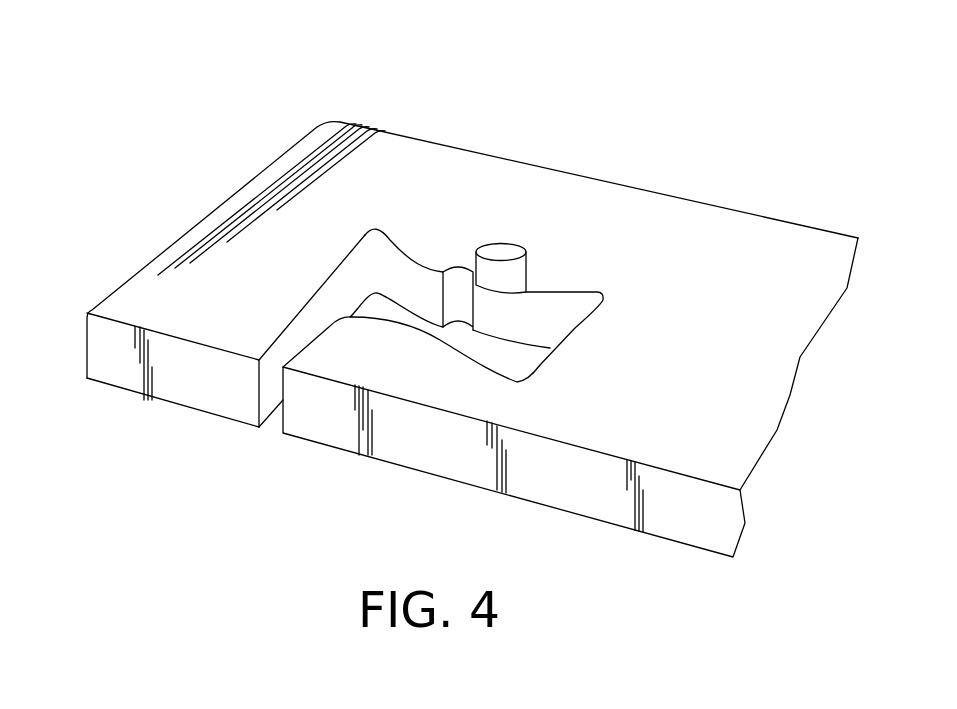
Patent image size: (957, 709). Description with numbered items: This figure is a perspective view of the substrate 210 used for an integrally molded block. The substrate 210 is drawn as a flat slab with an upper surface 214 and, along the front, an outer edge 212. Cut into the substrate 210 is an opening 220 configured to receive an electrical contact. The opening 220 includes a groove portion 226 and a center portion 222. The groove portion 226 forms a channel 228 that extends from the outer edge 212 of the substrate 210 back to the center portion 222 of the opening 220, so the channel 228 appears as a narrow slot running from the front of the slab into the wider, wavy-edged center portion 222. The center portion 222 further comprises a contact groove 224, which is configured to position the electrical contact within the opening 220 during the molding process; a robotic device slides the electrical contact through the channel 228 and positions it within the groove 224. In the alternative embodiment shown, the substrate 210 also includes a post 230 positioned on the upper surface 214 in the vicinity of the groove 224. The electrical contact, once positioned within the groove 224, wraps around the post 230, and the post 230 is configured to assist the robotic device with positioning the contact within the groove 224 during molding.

The substrate 210 is at (710, 223).
The outer edge 212 is at (418, 453).
The upper surface 214 is at (720, 335).
The opening 220 is at (528, 360).
The center portion 222 is at (462, 340).
The contact groove 224 is at (455, 280).
The groove portion 226 is at (277, 425).
The channel 228 is at (279, 377).
The post 230 is at (528, 278).